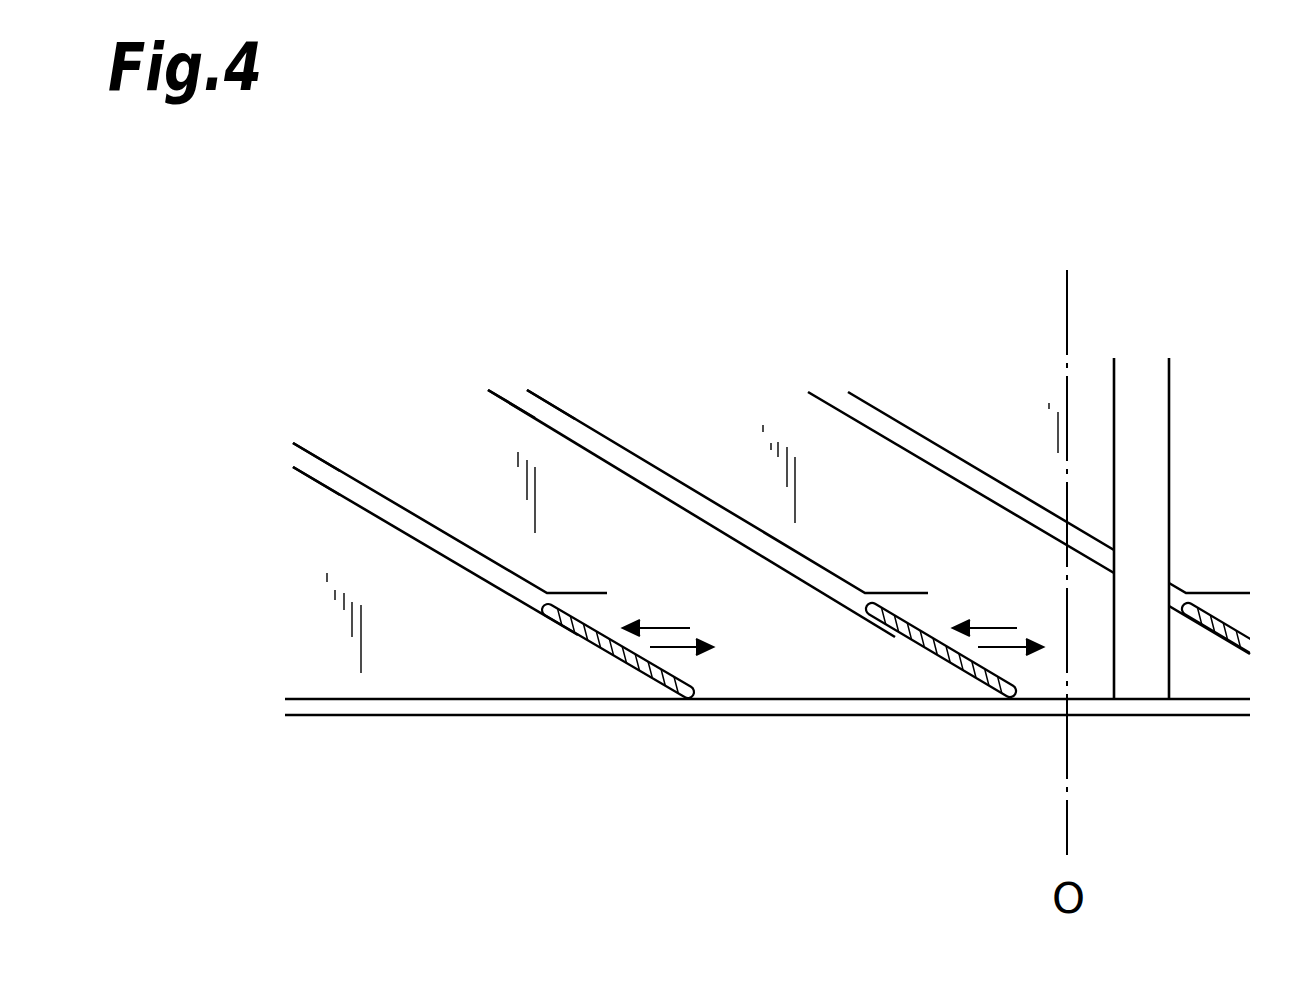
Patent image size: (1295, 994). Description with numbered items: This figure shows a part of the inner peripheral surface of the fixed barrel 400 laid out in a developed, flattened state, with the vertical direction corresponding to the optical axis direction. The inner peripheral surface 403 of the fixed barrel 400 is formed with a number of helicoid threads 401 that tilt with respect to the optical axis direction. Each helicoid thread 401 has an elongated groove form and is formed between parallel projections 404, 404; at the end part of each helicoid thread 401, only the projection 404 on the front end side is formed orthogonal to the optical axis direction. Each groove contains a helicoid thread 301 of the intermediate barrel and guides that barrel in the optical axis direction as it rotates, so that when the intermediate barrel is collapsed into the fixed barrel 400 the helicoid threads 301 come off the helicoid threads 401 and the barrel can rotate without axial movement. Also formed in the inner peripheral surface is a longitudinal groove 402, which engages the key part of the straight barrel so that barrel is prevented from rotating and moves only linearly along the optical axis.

The fixed barrel 400 is at (746, 718).
The inner peripheral surface 403 is at (442, 677).
The helicoid thread 401 is at (381, 497).
The projection 404 is at (308, 448).
The helicoid thread 301 is at (637, 675).
The longitudinal groove 402 is at (1159, 409).